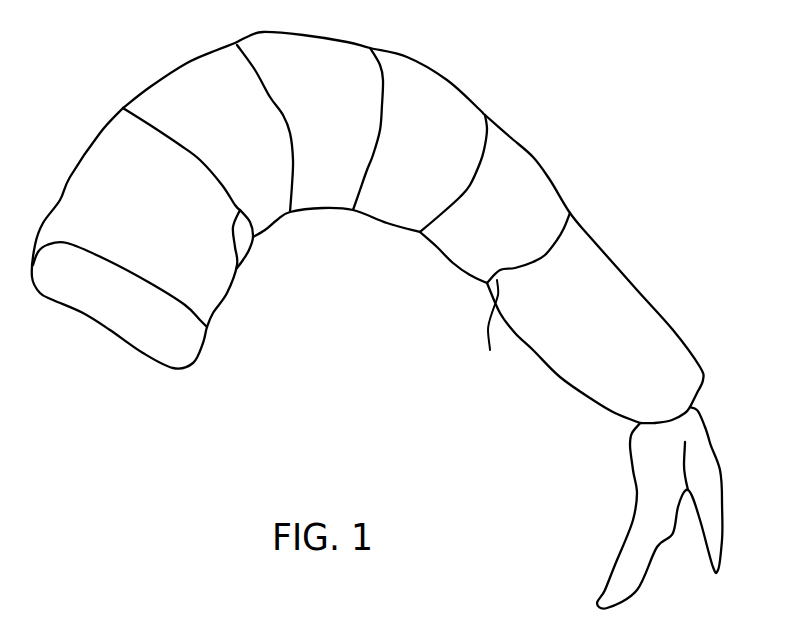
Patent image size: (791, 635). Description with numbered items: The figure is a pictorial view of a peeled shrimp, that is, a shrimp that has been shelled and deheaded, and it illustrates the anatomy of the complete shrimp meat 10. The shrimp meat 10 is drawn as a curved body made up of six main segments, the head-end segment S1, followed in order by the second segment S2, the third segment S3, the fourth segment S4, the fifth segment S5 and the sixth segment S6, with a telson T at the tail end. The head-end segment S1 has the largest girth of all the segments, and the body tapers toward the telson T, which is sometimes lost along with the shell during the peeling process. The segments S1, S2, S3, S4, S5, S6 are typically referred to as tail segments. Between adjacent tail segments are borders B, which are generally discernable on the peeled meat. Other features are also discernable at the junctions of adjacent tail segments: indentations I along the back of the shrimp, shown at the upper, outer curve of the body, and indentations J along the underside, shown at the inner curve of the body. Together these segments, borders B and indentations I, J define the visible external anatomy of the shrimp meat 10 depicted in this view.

The shrimp meat 10 is at (553, 95).
The head-end segment S1 is at (136, 238).
The second segment S2 is at (271, 141).
The third segment S3 is at (343, 129).
The fourth segment S4 is at (444, 173).
The fifth segment S5 is at (495, 240).
The sixth segment S6 is at (588, 353).
The telson T is at (659, 508).
The indentations along the back I is at (123, 107).
The indentations along the underside J is at (253, 237).
The borders B is at (242, 262).